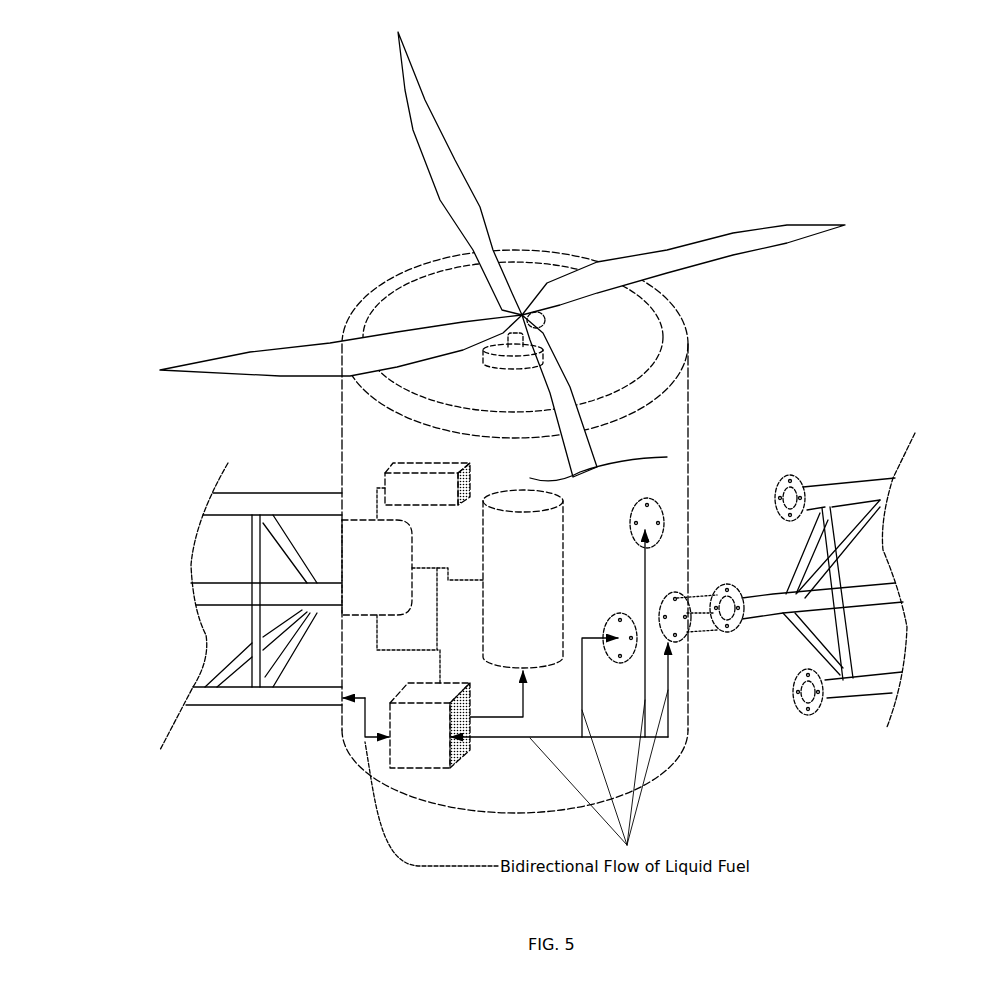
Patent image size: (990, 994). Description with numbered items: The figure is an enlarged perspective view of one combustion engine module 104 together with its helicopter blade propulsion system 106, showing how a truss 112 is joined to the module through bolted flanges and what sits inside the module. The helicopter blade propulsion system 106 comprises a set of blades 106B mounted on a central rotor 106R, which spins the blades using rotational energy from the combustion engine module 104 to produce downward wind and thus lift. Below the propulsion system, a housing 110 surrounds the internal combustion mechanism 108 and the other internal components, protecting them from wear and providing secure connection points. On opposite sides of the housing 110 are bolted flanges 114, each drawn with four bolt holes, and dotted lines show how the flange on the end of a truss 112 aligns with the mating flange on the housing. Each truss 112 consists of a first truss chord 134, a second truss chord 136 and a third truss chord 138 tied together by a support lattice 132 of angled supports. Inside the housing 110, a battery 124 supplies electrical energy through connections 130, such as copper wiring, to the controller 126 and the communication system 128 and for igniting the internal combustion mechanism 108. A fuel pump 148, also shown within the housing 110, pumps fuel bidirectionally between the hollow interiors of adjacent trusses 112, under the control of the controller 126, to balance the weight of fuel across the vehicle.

The combustion engine module 104 is at (368, 270).
The helicopter blade propulsion system 106 is at (537, 256).
The blades 106B is at (427, 133).
The rotor 106R is at (525, 317).
The housing 110 is at (647, 433).
The internal combustion mechanism 108 is at (528, 540).
The controller 126 is at (410, 482).
The communication system 128 is at (427, 484).
The connections 130 is at (433, 568).
The battery 124 is at (378, 563).
The fuel pump 148 is at (430, 748).
The bolted flange 114 is at (795, 667).
The truss 112 is at (225, 716).
The third truss chord 138 is at (262, 505).
The first truss chord 134 is at (228, 592).
The second truss chord 136 is at (230, 697).
The support lattice 132 is at (245, 627).